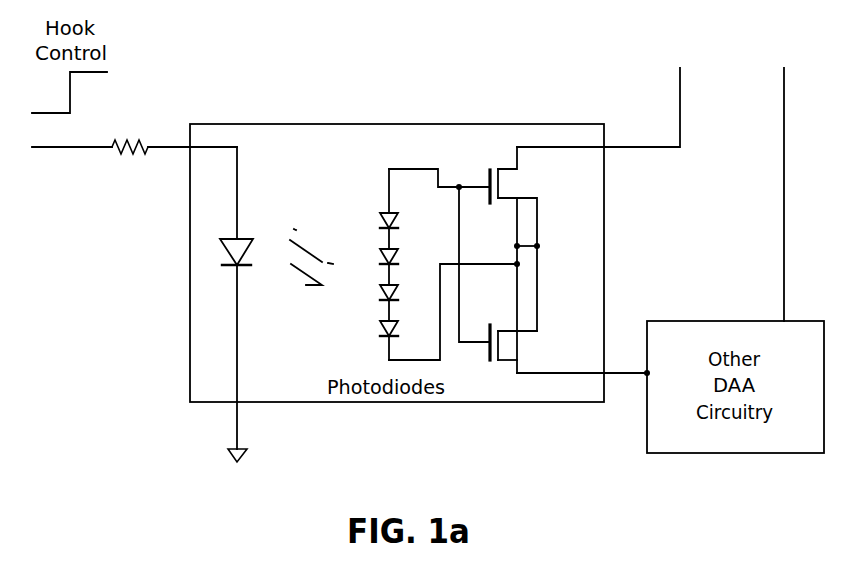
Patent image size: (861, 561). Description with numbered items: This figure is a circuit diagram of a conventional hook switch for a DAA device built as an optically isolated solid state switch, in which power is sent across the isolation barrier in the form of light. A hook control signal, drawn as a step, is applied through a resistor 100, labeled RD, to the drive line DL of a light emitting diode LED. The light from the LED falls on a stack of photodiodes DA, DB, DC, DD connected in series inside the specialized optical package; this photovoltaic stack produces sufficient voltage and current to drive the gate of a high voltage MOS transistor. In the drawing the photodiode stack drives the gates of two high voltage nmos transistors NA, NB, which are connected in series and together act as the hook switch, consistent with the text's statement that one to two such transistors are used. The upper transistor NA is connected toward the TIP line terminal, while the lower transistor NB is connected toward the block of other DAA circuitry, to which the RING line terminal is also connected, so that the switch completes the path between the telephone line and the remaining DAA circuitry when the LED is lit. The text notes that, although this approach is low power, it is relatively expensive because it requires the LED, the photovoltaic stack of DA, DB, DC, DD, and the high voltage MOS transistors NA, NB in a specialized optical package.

The hook control resistor RD 100 is at (131, 119).
The resistor RD is at (130, 132).
The LED drive line DL is at (196, 298).
The light emitting diode LED is at (253, 227).
The photodiode A DA is at (368, 220).
The photodiode B DB is at (368, 256).
The photodiode C DC is at (368, 293).
The photodiode D DD is at (368, 329).
The nmos transistor A NA is at (529, 239).
The nmos transistor B NB is at (529, 318).
The TIP line TIP is at (620, 107).
The RING line RING is at (814, 194).